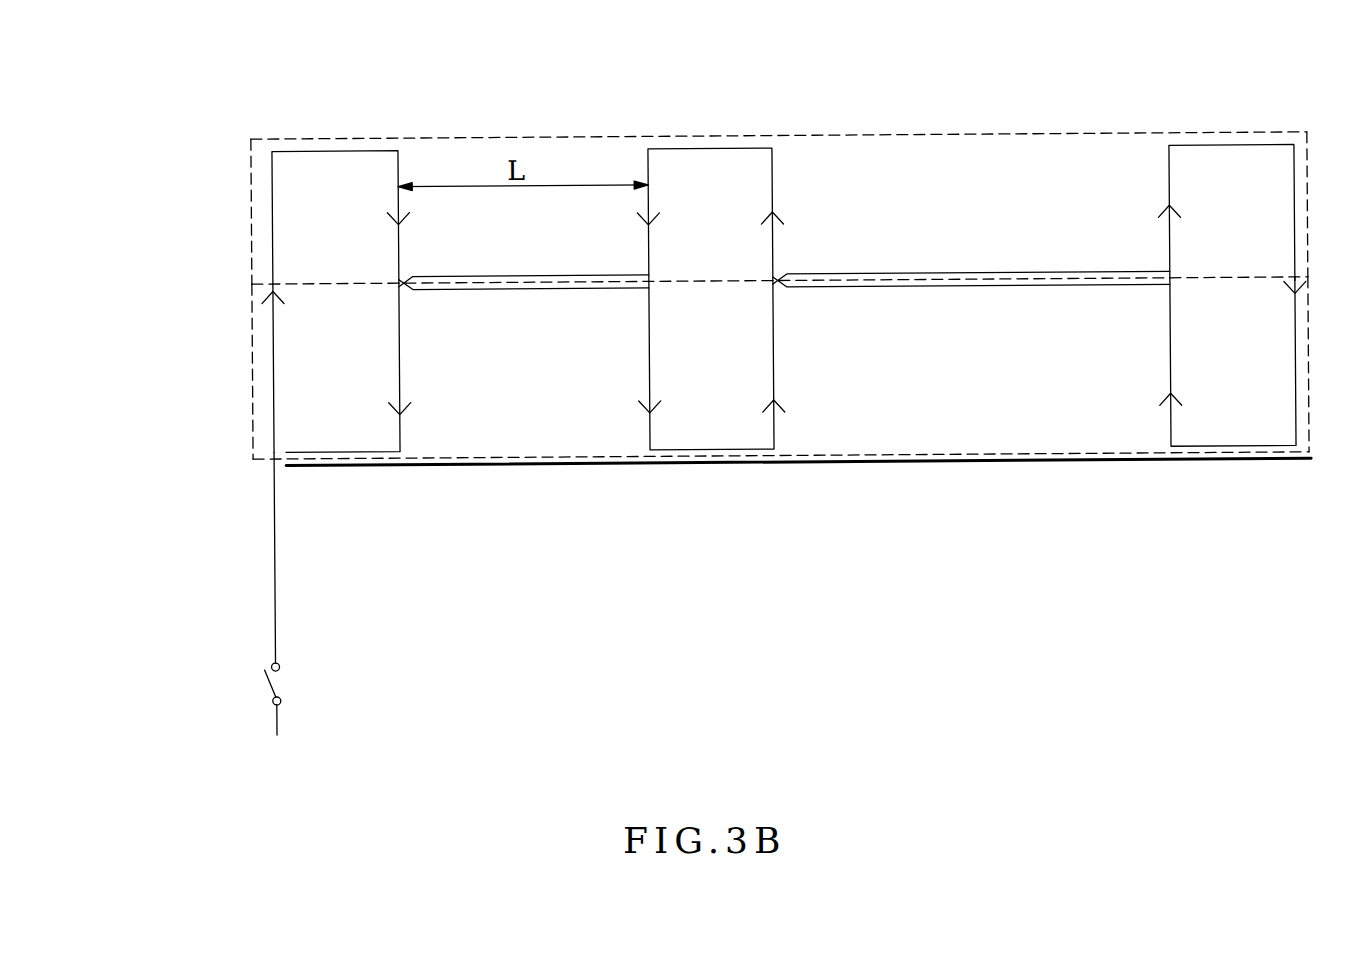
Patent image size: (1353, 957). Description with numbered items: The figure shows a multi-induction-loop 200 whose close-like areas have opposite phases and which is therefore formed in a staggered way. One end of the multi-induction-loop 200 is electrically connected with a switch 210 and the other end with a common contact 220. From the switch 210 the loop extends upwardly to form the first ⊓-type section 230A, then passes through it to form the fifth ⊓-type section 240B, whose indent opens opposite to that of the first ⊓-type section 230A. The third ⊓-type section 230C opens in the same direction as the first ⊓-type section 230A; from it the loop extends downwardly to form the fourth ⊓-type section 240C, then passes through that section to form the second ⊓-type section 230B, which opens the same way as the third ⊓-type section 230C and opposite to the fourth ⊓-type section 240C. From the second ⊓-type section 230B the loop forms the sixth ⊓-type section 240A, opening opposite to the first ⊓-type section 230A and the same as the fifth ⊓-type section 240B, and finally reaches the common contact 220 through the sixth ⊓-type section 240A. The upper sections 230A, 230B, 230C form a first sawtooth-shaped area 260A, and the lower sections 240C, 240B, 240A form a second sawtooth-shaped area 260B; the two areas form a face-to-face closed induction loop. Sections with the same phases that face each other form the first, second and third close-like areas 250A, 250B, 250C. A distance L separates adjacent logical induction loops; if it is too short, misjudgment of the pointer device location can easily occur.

The multi-induction-loop 200 is at (274, 532).
The switch 210 is at (274, 706).
The common contact 220 is at (933, 467).
The first ⊓-type section 230A is at (283, 202).
The second ⊓-type section 230B is at (714, 190).
The third ⊓-type section 230C is at (1210, 191).
The sixth ⊓-type section 240A is at (283, 408).
The fifth ⊓-type section 240B is at (713, 422).
The fourth ⊓-type section 240C is at (1212, 425).
The first close-like area 250A is at (476, 300).
The second close-like area 250B is at (924, 298).
The third close-like area 250C is at (1243, 299).
The first sawtooth-shaped area 260A is at (525, 135).
The second sawtooth-shaped area 260B is at (525, 460).